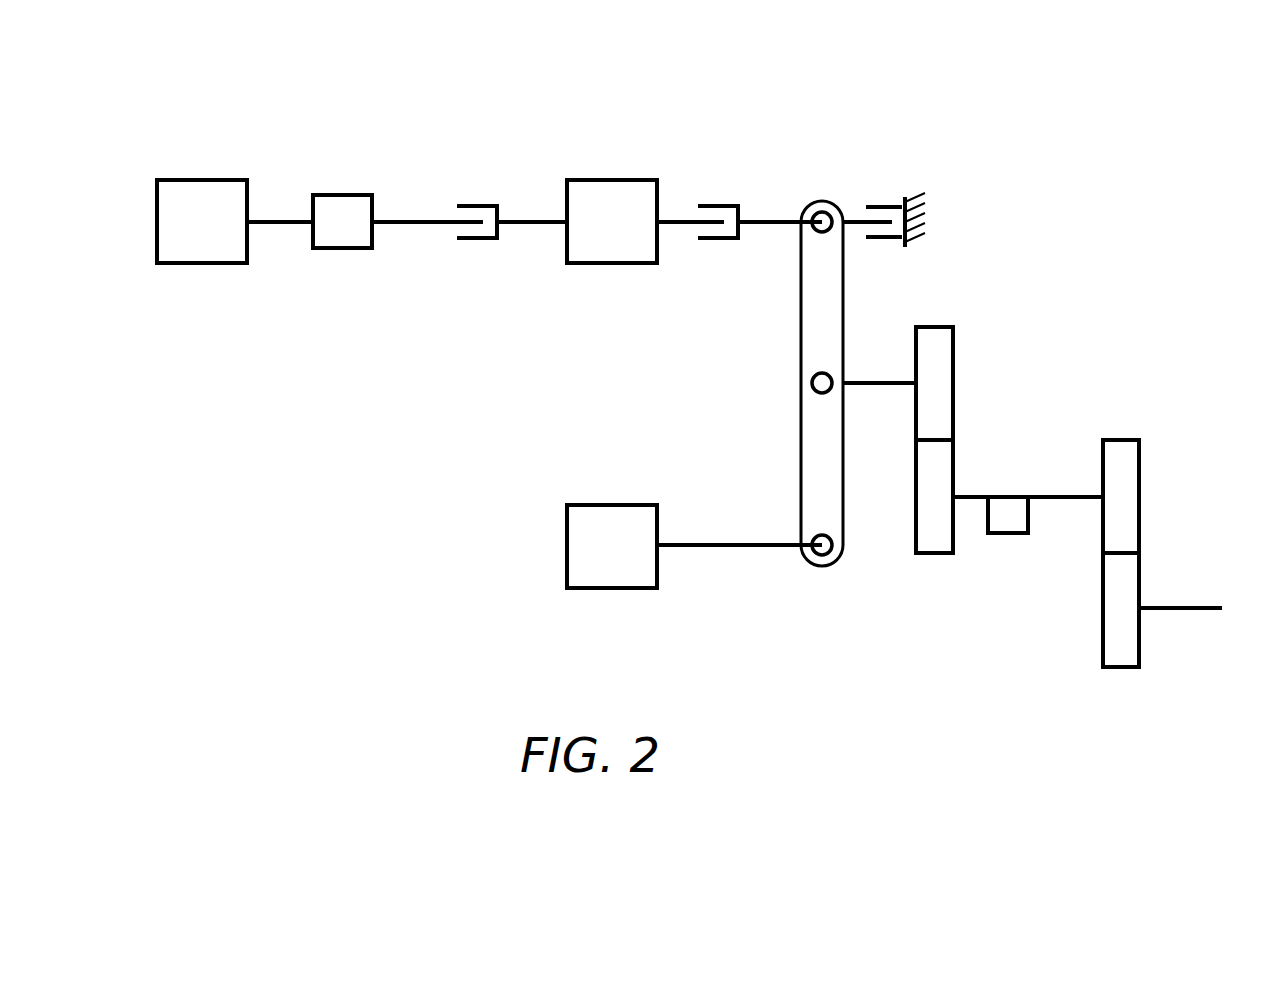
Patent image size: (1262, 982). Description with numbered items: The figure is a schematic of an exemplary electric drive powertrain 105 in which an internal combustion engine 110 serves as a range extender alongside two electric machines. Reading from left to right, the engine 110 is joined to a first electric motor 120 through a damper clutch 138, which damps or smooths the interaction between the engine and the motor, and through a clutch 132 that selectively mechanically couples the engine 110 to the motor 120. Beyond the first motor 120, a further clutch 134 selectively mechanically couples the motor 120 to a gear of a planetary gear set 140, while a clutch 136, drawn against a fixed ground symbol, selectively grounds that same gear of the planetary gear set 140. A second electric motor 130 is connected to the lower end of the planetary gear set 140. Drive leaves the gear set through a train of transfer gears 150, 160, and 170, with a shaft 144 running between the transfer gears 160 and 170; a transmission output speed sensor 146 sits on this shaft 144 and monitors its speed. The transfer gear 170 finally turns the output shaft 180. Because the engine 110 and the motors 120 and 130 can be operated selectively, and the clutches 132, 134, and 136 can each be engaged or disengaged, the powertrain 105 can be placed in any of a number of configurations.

The electric drive powertrain 105 is at (166, 110).
The internal combustion engine 110 is at (206, 178).
The damper clutch 138 is at (346, 193).
The clutch 132 is at (476, 203).
The first electric motor 120 is at (614, 178).
The clutch 134 is at (720, 203).
The planetary gear set 140 is at (823, 199).
The clutch 136 is at (889, 196).
The transfer gear 150 is at (958, 343).
The transfer gear 160 is at (958, 551).
The shaft 144 is at (1047, 492).
The transmission output speed sensor 146 is at (1033, 529).
The transfer gear 170 is at (1146, 453).
The output shaft 180 is at (1182, 614).
The second electric motor 130 is at (614, 503).